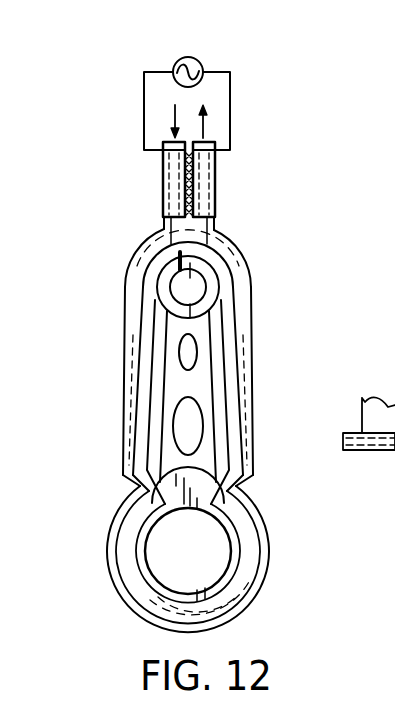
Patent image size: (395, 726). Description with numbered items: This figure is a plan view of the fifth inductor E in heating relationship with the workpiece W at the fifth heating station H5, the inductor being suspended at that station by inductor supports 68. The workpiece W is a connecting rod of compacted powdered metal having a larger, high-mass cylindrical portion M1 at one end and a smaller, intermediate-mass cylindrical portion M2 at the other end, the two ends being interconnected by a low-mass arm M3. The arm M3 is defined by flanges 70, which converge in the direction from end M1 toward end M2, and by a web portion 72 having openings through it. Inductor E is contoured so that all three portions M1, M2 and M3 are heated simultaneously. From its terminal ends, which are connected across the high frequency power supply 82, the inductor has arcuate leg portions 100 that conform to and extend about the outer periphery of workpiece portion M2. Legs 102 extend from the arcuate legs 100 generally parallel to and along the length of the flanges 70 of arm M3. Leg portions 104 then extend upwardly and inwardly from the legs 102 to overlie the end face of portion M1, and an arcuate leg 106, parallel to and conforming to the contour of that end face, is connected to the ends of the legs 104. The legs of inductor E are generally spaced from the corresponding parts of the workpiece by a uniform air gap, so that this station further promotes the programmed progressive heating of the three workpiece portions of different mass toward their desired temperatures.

The high frequency power supply 82 is at (200, 60).
The inductor supports 68 is at (215, 176).
The arcuate leg portions 100 is at (137, 255).
The cylindrical portion M2 is at (206, 262).
The inductor E is at (120, 306).
The legs 102 is at (136, 342).
The arm M3 is at (140, 415).
The leg portions 104 is at (126, 479).
The flanges 70 is at (158, 383).
The workpiece W is at (228, 414).
The web portion 72 is at (207, 452).
The cylindrical portion M1 is at (267, 572).
The heating station H5 is at (100, 519).
The arcuate leg 106 is at (140, 594).